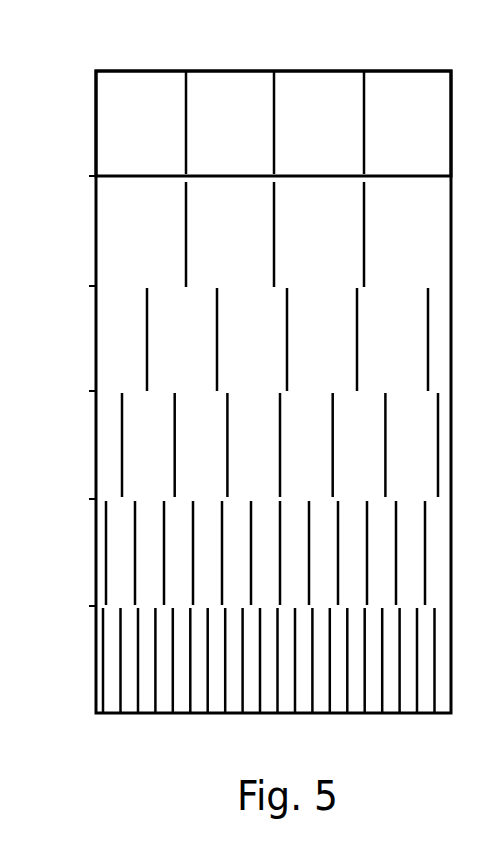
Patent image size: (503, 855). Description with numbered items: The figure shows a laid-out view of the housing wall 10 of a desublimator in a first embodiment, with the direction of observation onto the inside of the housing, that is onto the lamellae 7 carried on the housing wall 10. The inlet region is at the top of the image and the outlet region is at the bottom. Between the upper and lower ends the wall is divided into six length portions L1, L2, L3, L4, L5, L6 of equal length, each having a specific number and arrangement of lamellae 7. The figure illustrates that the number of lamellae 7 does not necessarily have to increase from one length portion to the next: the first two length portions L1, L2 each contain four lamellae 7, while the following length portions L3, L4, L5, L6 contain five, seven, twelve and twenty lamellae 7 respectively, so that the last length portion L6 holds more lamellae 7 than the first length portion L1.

The housing wall 10 is at (205, 71).
The lamellae 7 is at (98, 125).
The first length portion L1 is at (239, 123).
The second length portion L2 is at (195, 234).
The third length portion L3 is at (227, 339).
The fourth length portion L4 is at (232, 445).
The fifth length portion L5 is at (226, 553).
The last length portion L6 is at (231, 660).